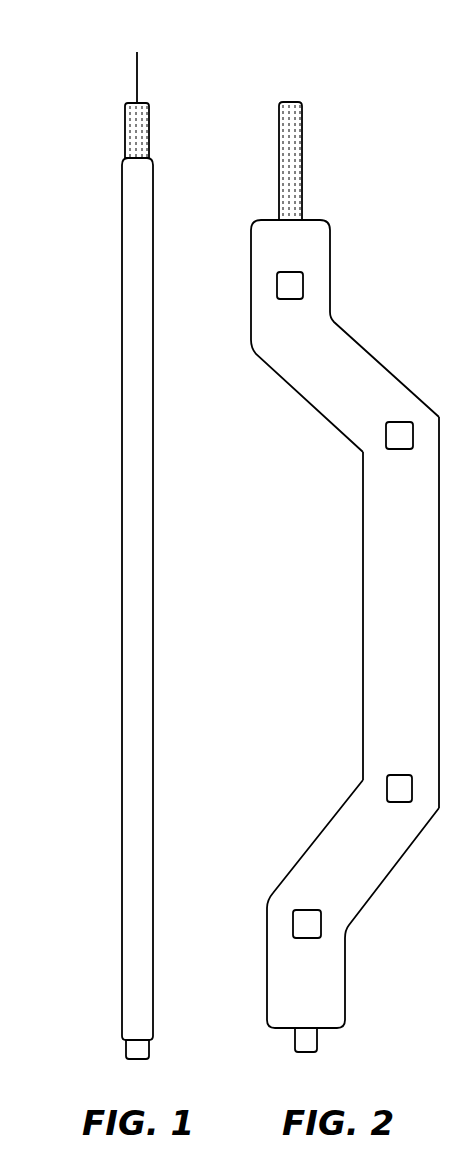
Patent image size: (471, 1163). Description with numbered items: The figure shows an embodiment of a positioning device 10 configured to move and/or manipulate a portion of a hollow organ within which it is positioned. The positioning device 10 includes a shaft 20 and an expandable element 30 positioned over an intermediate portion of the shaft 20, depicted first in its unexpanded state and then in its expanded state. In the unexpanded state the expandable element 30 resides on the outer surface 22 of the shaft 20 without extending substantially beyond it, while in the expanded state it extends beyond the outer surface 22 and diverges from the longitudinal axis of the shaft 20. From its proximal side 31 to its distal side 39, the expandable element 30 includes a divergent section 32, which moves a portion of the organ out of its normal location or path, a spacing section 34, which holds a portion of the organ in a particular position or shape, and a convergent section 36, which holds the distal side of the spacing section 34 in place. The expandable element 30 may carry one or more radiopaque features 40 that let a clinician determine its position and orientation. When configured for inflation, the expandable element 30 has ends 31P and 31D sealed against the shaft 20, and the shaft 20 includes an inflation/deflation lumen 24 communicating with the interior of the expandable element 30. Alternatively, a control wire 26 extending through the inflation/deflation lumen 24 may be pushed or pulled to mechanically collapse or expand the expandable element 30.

In FIG. 1, the positioning device 10 is at (78, 72).
In FIG. 2, the positioning device 10 is at (335, 84).
In FIG. 1, the shaft 20 is at (125, 126).
In FIG. 2, the shaft 20 is at (303, 152).
In FIG. 1, the outer surface 22 is at (124, 144).
In FIG. 2, the outer surface 22 is at (277, 140).
In FIG. 1, the inflation/deflation lumen 24 is at (152, 112).
In FIG. 1, the control wire 26 is at (140, 76).
In FIG. 1, the expandable element 30 is at (128, 430).
In FIG. 2, the expandable element 30 is at (288, 483).
In FIG. 1, the proximal side 31 is at (140, 170).
In FIG. 2, the proximal side 31 is at (270, 235).
In FIG. 1, the proximal end 31P is at (120, 155).
In FIG. 2, the proximal end 31P is at (315, 220).
In FIG. 1, the distal end 31D is at (120, 1040).
In FIG. 2, the distal end 31D is at (327, 1032).
In FIG. 2, the divergent section 32 is at (356, 404).
In FIG. 2, the spacing section 34 is at (385, 593).
In FIG. 2, the convergent section 36 is at (345, 838).
In FIG. 1, the distal side 39 is at (138, 1020).
In FIG. 2, the distal side 39 is at (325, 1005).
In FIG. 2, the radiopaque feature 40 is at (398, 432).